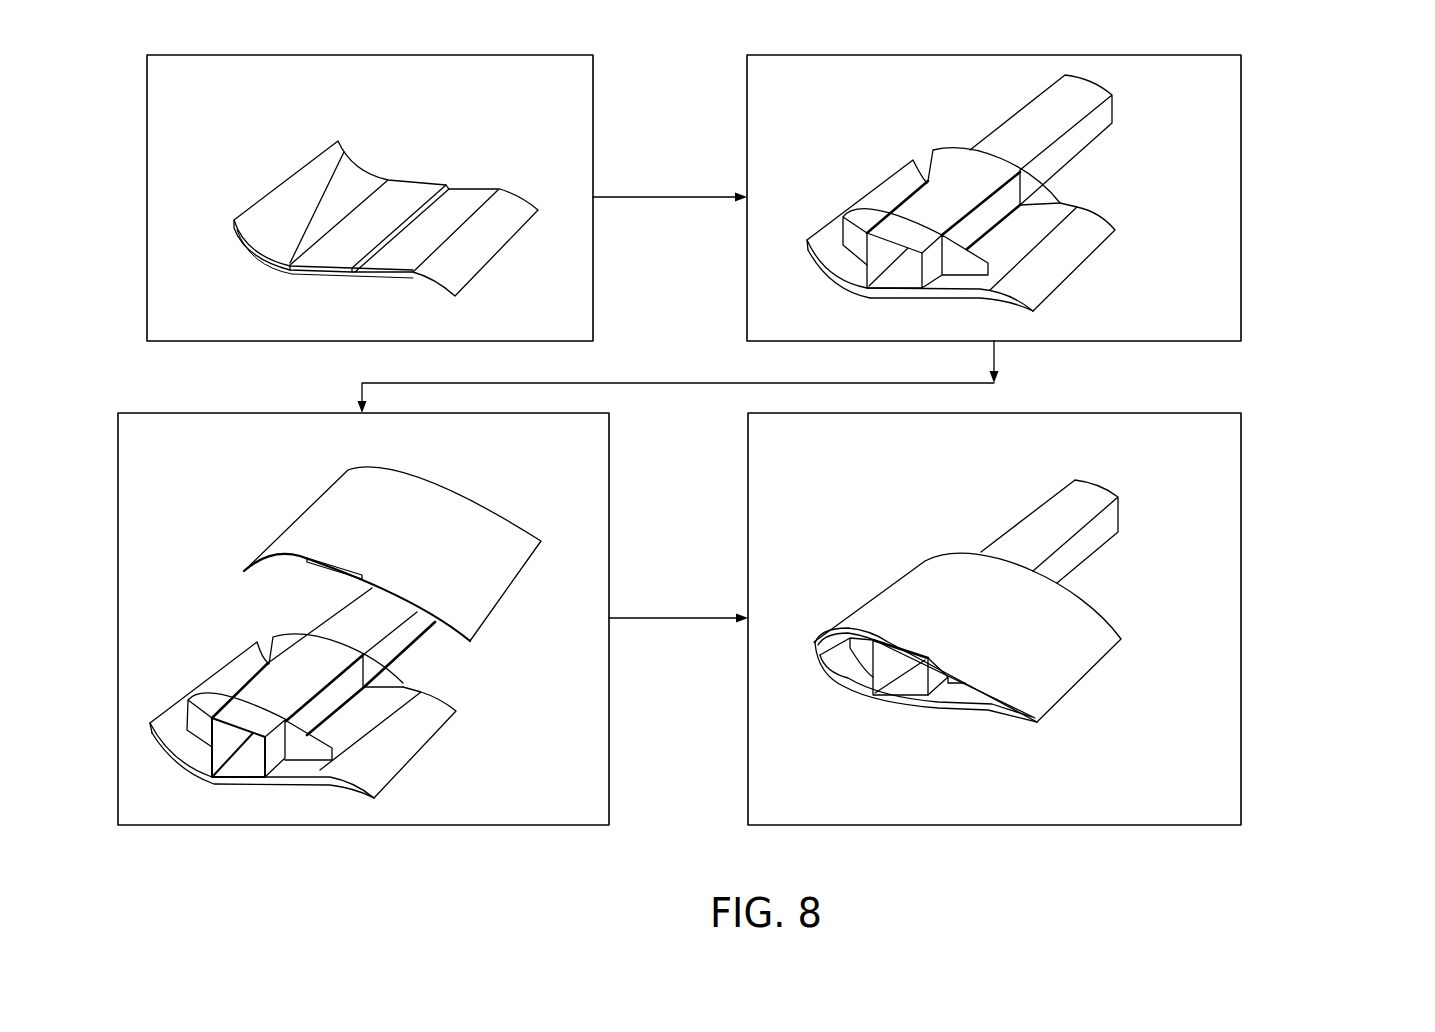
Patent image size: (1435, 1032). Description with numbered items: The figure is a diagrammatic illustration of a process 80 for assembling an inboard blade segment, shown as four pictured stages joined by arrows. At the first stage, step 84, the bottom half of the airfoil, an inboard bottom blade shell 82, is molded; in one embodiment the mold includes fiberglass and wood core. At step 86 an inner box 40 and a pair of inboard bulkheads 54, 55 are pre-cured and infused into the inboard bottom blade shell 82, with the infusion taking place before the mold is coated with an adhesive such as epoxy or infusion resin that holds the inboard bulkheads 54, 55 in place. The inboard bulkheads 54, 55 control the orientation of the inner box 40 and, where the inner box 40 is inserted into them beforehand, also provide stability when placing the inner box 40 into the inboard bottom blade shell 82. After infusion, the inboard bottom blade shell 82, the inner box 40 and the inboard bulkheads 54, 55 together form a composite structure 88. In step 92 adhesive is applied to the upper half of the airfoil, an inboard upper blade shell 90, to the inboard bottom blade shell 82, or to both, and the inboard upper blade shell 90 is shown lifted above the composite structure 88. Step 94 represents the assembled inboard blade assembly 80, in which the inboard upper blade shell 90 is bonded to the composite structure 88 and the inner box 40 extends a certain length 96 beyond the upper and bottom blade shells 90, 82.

The process 80 is at (1326, 860).
The inboard bottom blade shell 82 is at (508, 202).
The step 84 is at (138, 107).
The step 86 is at (1253, 81).
The composite structure 88 is at (196, 790).
The inboard upper blade shell 90 is at (508, 526).
The step 92 is at (110, 458).
The step 94 is at (1254, 437).
The length 96 is at (1123, 542).
The inner box 40 is at (1078, 140).
The inboard bulkhead 54 is at (933, 151).
The inboard bulkhead 55 is at (853, 213).